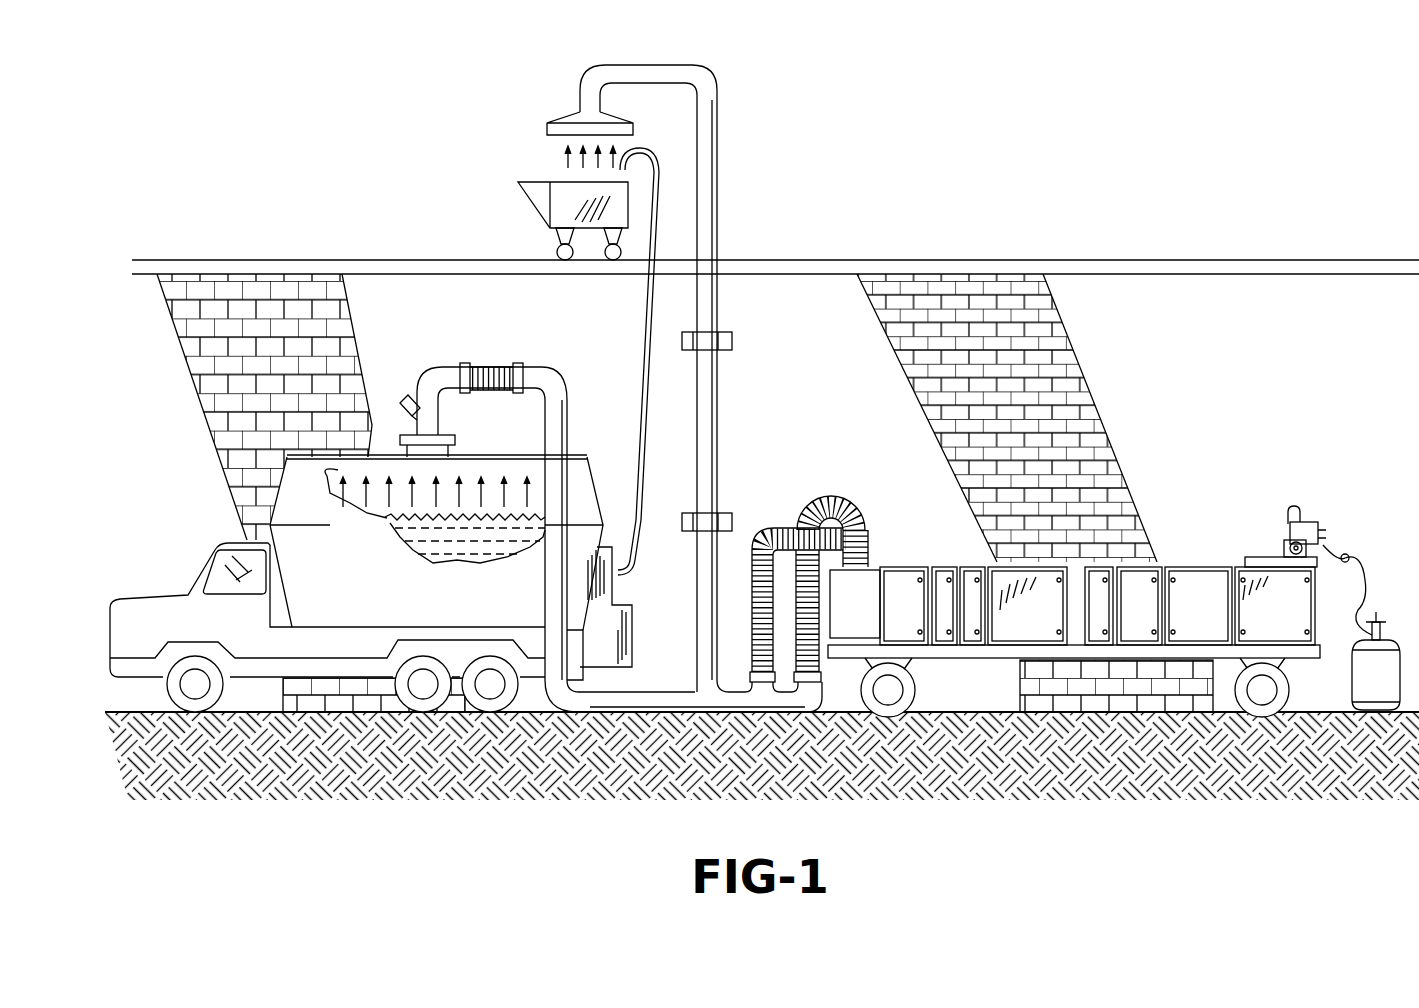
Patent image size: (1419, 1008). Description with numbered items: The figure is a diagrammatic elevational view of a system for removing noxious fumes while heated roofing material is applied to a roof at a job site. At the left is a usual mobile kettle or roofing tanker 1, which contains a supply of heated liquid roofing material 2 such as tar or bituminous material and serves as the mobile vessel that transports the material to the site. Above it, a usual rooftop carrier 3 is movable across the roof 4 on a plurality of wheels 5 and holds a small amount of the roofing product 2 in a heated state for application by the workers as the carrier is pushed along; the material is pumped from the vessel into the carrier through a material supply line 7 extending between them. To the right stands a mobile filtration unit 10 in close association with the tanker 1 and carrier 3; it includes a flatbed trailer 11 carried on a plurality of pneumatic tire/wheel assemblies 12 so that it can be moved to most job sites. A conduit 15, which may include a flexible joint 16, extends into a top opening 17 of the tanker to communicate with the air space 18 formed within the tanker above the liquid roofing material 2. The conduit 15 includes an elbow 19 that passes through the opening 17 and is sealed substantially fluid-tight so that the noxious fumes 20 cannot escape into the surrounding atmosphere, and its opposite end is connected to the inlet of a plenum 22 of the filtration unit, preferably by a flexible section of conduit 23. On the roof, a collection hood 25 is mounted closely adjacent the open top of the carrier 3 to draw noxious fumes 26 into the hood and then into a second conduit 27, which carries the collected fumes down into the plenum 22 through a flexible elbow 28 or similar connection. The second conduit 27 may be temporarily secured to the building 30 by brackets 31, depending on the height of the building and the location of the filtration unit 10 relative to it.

The mobile roofing tanker 1 is at (192, 578).
The heated liquid roofing material 2 is at (425, 550).
The rooftop carrier 3 is at (514, 196).
The roof 4 is at (270, 262).
The wheels 5 is at (553, 252).
The material supply line 7 is at (650, 333).
The mobile filtration unit 10 is at (1114, 591).
The flatbed trailer 11 is at (988, 652).
The pneumatic tire/wheel assemblies 12 is at (887, 693).
The conduit 15 is at (633, 718).
The flexible joint 16 is at (491, 365).
The top opening 17 is at (437, 466).
The air space 18 is at (347, 478).
The elbow 19 is at (447, 366).
The noxious fumes 20 is at (530, 497).
The plenum 22 is at (858, 586).
The flexible section of conduit 23 is at (772, 528).
The collection hood 25 is at (570, 118).
The noxious fumes 26 is at (566, 160).
The second conduit 27 is at (726, 160).
The flexible elbow 28 is at (832, 497).
The building 30 is at (1146, 312).
The brackets 31 is at (736, 338).